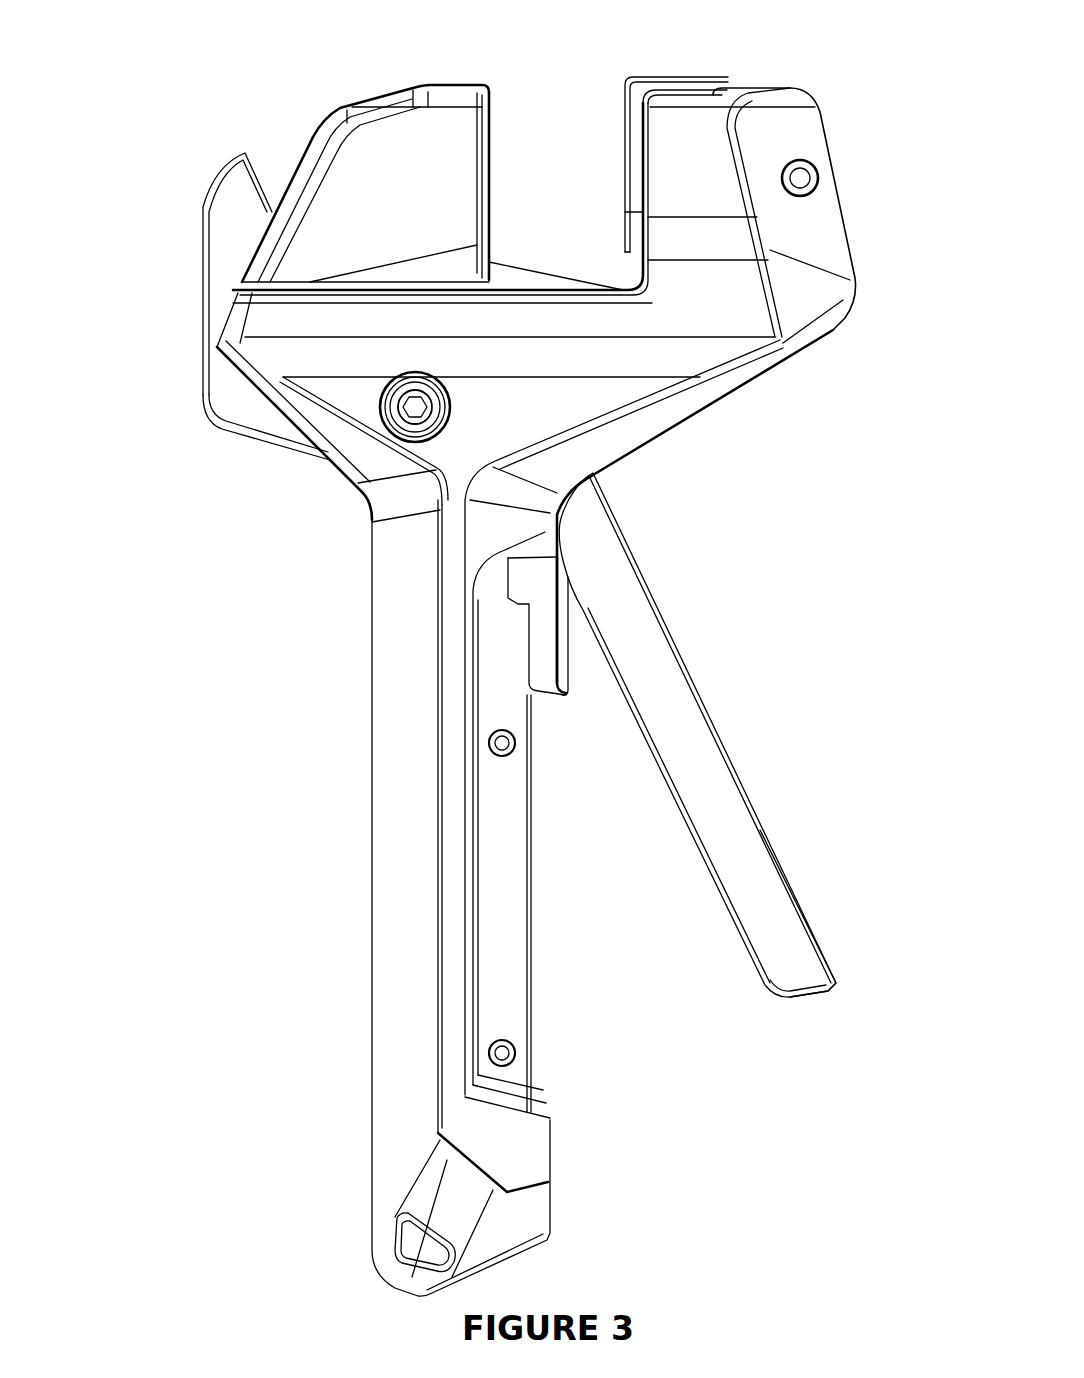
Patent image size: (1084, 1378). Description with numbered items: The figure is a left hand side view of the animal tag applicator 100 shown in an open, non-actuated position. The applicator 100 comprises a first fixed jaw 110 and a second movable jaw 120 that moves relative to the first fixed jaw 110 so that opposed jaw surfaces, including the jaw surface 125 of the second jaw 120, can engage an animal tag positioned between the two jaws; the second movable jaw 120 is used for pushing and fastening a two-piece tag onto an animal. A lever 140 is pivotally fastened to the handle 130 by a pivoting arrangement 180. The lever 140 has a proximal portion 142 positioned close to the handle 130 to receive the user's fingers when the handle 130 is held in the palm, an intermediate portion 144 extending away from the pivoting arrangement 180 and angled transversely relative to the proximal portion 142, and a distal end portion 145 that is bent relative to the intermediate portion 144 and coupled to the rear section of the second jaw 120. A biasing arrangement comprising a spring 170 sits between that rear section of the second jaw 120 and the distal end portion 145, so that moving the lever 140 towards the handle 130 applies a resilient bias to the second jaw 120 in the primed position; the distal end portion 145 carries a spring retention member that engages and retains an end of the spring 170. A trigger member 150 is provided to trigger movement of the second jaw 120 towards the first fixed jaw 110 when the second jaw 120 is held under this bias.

The animal tag applicator 100 is at (345, 748).
The first fixed jaw 110 is at (733, 122).
The second movable jaw 120 is at (421, 140).
The jaw surface 125 is at (627, 122).
The handle 130 is at (385, 935).
The lever 140 is at (672, 695).
The proximal portion 142 is at (766, 866).
The intermediate portion 144 is at (262, 418).
The distal end portion 145 is at (242, 225).
The trigger member 150 is at (571, 690).
The spring 170 is at (285, 170).
The pivoting arrangement 180 is at (432, 408).